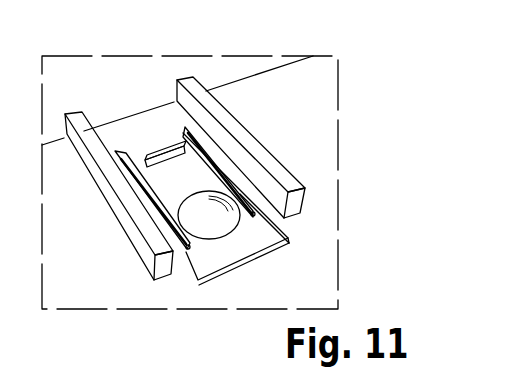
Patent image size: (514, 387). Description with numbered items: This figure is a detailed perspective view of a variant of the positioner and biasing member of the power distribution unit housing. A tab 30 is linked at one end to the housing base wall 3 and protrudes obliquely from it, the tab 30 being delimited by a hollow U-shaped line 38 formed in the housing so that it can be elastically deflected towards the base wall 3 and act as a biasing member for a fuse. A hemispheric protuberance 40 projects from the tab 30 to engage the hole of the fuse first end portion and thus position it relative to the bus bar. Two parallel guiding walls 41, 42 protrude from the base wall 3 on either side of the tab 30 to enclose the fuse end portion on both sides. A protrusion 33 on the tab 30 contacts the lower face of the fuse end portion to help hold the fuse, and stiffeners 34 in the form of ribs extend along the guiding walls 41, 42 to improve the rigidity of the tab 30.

The tab 30 is at (245, 245).
The protrusion 33 is at (170, 151).
The stiffeners 34 is at (230, 186).
The hollow U-shaped line 38 is at (217, 220).
The protuberance 40 is at (233, 221).
The guiding wall 41 is at (199, 91).
The guiding wall 42 is at (78, 122).
The base wall 3 is at (85, 243).